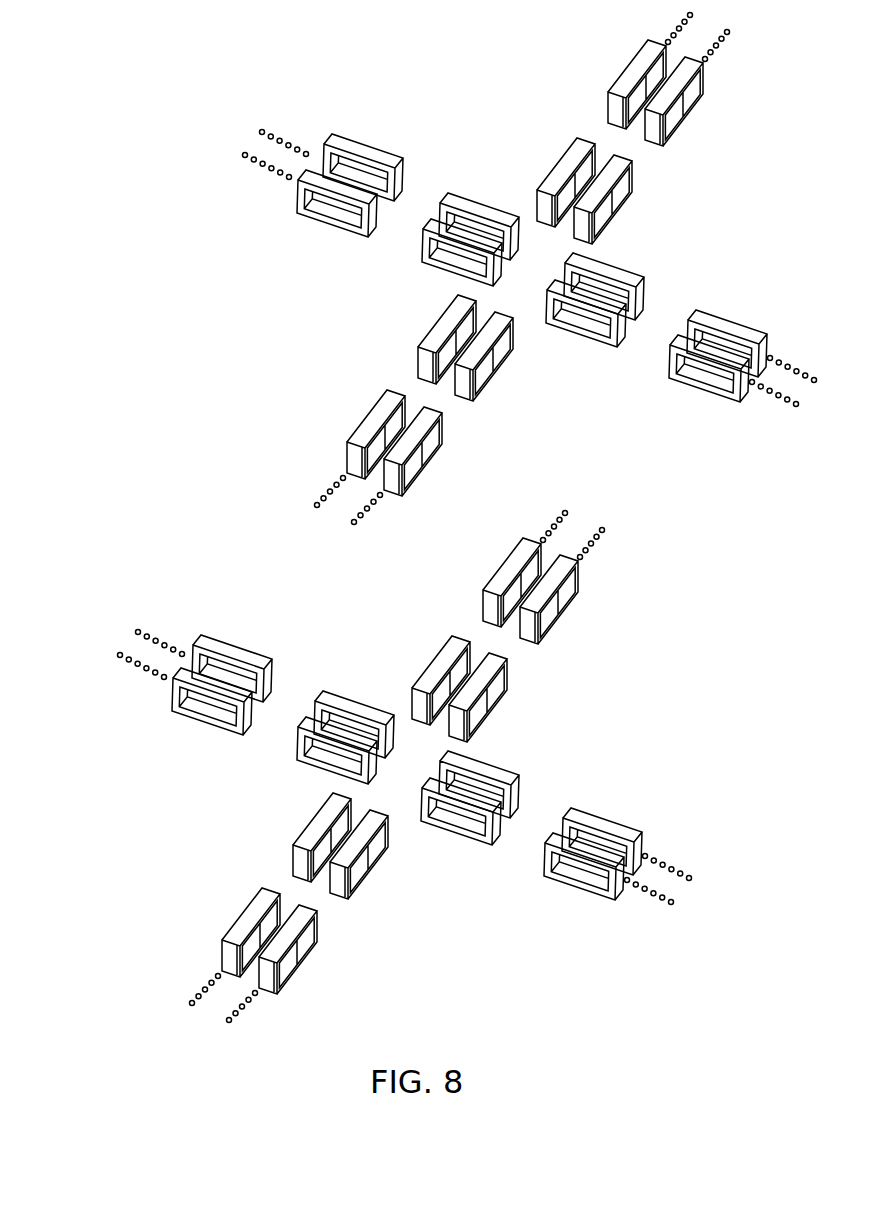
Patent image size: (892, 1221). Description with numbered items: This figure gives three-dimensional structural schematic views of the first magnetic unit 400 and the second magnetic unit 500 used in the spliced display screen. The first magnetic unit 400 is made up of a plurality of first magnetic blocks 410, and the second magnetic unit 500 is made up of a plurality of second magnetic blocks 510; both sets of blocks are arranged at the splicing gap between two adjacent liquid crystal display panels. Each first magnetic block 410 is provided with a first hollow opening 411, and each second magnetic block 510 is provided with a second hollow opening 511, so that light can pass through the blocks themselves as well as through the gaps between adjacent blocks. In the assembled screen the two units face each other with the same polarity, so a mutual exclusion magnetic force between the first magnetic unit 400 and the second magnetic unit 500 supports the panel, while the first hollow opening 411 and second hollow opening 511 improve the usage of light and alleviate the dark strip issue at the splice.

The first magnetic unit 400 is at (360, 767).
The first magnetic block 410 is at (169, 713).
The first hollow opening 411 is at (201, 717).
The second magnetic unit 500 is at (464, 269).
The second magnetic block 510 is at (297, 214).
The second hollow opening 511 is at (331, 220).